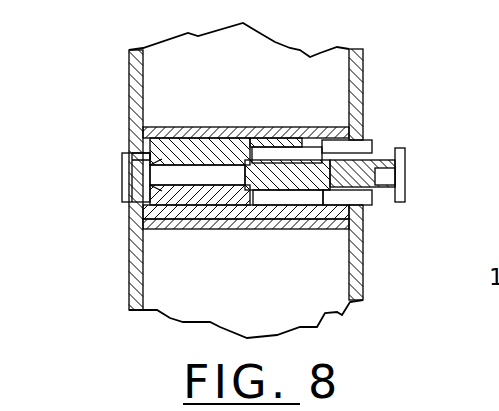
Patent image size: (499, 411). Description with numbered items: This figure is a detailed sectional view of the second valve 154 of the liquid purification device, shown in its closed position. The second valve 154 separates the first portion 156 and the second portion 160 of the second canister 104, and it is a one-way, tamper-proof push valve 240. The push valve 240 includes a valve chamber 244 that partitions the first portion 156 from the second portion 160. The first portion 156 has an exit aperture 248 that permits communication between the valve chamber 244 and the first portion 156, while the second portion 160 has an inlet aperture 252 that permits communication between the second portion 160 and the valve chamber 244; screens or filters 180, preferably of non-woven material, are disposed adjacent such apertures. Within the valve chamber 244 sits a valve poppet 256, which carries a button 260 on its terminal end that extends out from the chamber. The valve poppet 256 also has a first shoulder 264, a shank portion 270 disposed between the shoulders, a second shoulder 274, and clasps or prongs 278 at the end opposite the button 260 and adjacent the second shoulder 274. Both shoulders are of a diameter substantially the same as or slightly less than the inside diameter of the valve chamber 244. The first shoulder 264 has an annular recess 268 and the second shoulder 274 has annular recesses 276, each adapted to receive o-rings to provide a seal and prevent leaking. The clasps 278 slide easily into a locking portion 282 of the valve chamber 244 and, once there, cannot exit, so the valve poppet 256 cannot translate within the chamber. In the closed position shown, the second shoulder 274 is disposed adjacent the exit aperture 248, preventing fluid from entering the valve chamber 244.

The second canister 104 is at (129, 103).
The second valve 154 is at (404, 128).
The first portion 156 is at (333, 312).
The second portion 160 is at (293, 60).
The screens or filters 180 is at (302, 133).
The push valve 240 is at (418, 168).
The valve chamber 244 is at (148, 200).
The exit aperture 248 is at (218, 222).
The inlet aperture 252 is at (267, 150).
The valve poppet 256 is at (299, 206).
The button 260 is at (405, 192).
The first shoulder 264 is at (330, 206).
The annular recess 268 is at (333, 140).
The shank portion 270 is at (266, 208).
The second shoulder 274 is at (200, 208).
The annular recesses 276 is at (233, 145).
The clasps or prongs 278 is at (130, 152).
The locking portion 282 is at (122, 180).